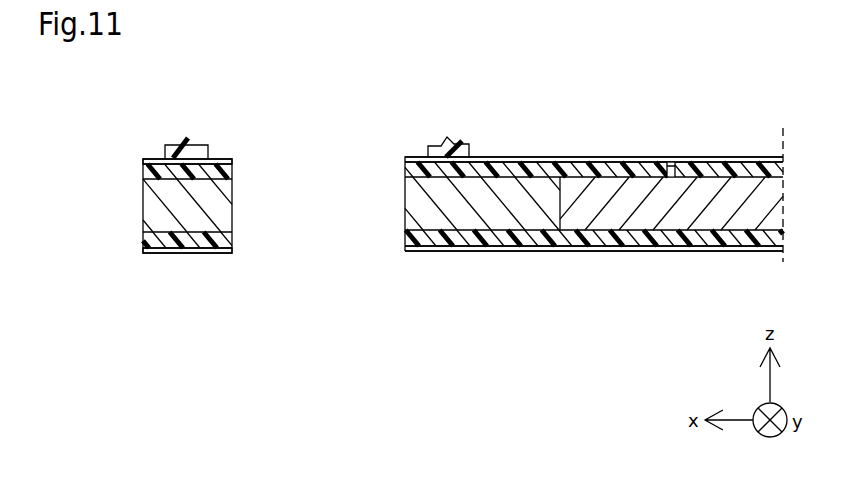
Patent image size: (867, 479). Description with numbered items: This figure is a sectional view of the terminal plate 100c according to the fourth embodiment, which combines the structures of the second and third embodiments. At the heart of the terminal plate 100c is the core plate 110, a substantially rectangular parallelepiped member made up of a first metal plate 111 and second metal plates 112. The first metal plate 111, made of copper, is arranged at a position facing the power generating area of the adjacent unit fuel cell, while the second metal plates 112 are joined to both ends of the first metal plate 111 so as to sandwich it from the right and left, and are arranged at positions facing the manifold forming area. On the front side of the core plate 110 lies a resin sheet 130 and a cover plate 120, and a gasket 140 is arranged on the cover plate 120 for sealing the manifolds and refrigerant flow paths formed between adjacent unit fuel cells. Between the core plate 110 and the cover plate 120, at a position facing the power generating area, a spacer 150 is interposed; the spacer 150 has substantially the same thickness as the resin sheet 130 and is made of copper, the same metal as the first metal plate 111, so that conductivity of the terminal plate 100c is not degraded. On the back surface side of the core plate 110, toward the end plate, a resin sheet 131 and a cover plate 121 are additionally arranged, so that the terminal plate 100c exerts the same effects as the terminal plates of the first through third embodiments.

The terminal plate 100c is at (113, 108).
The core plate 110 is at (662, 290).
The first metal plate 111 is at (640, 220).
The second metal plate 112 is at (188, 222).
The cover plate 120 is at (145, 158).
The cover plate 121 is at (152, 255).
The resin sheet 130 is at (143, 165).
The resin sheet 131 is at (147, 242).
The gasket 140 is at (202, 145).
The spacer 150 is at (700, 163).